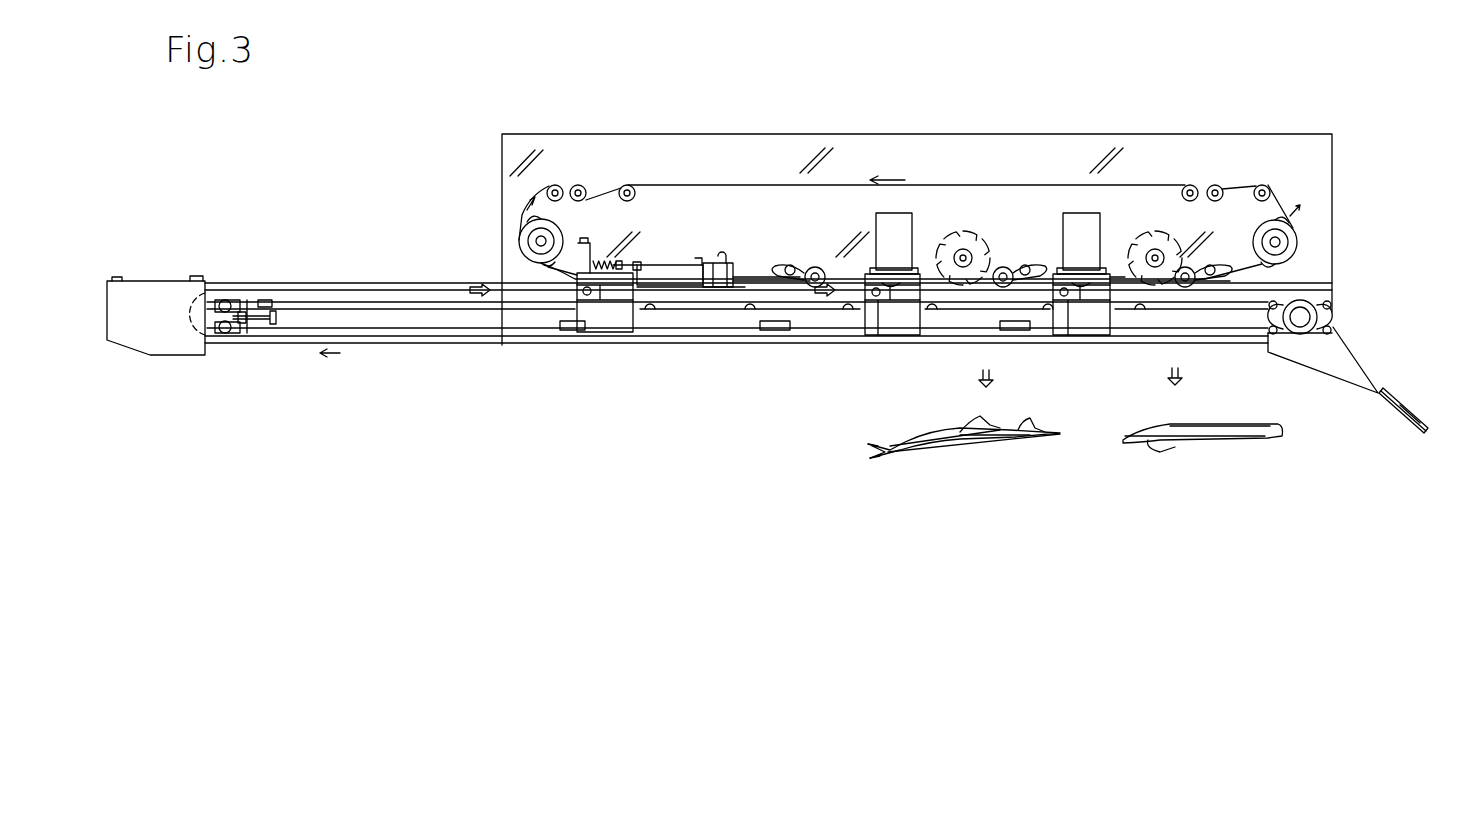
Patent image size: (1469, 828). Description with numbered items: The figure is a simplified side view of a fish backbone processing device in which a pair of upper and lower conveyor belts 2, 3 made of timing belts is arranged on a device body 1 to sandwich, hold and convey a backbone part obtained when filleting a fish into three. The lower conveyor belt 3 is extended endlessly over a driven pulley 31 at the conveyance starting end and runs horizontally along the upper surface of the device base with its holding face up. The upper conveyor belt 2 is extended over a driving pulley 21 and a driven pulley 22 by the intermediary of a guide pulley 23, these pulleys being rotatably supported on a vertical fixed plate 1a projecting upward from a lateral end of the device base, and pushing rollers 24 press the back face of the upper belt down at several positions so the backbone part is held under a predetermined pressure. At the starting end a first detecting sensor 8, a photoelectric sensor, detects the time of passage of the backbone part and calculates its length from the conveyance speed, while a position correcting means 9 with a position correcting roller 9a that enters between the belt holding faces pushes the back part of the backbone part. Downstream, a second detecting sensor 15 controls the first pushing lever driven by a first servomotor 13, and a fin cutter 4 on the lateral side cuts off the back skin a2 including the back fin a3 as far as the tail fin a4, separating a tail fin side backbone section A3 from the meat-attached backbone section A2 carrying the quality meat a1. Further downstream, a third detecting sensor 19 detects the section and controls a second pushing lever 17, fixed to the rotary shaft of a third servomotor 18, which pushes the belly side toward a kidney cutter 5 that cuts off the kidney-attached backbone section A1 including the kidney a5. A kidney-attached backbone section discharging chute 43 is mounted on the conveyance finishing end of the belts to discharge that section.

The device body 1 is at (350, 282).
The vertical fixed plate 1a is at (969, 155).
The upper conveyor belt 2 is at (716, 186).
The lower conveyor belt 3 is at (425, 290).
The fin cutter 4 is at (957, 232).
The kidney cutter 5 is at (1140, 231).
The first detecting sensor 8 is at (588, 296).
The position correcting means 9 is at (699, 256).
The position correcting roller 9a is at (728, 290).
The first servomotor 13 is at (880, 224).
The second detecting sensor 15 is at (878, 297).
The second pushing lever 17 is at (1125, 288).
The third servomotor 18 is at (1068, 225).
The third detecting sensor 19 is at (1067, 297).
The driving pulley 21 is at (1298, 243).
The driven pulley 22 is at (522, 236).
The guide pulley 23 is at (634, 199).
The pushing rollers 24 is at (815, 267).
The driven pulley 31 is at (188, 332).
The kidney-attached backbone section discharging chute 43 is at (1348, 380).
The kidney-attached backbone section A1 is at (1392, 393).
The meat-attached backbone section A2 is at (1205, 440).
The tail fin side backbone section A3 is at (908, 455).
The meat a1 is at (1222, 426).
The back skin a2 is at (996, 440).
The back fin a3 is at (1032, 419).
The tail fin a4 is at (887, 455).
The kidney a5 is at (1406, 425).